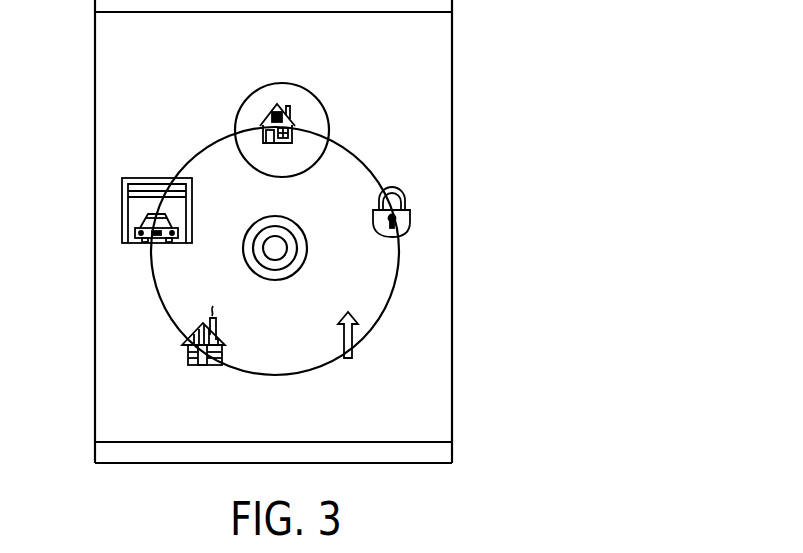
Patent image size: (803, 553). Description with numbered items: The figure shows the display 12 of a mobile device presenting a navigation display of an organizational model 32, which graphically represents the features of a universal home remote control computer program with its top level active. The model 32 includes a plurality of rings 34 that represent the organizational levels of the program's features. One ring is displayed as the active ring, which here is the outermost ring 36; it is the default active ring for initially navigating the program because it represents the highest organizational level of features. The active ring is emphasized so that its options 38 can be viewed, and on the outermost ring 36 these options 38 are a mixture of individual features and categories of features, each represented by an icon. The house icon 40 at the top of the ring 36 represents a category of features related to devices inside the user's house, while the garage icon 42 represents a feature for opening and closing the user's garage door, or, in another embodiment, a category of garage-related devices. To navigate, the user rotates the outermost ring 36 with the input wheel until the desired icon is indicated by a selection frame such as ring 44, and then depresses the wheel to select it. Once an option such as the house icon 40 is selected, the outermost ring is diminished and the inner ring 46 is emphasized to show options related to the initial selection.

The display 12 is at (435, 308).
The organizational model 32 is at (418, 143).
The rings 34 is at (242, 253).
The outermost ring 36 is at (200, 148).
The options 38 is at (410, 215).
The house icon 40 is at (290, 118).
The garage icon 42 is at (135, 210).
The ring 44 is at (240, 103).
The inner ring 46 is at (307, 252).